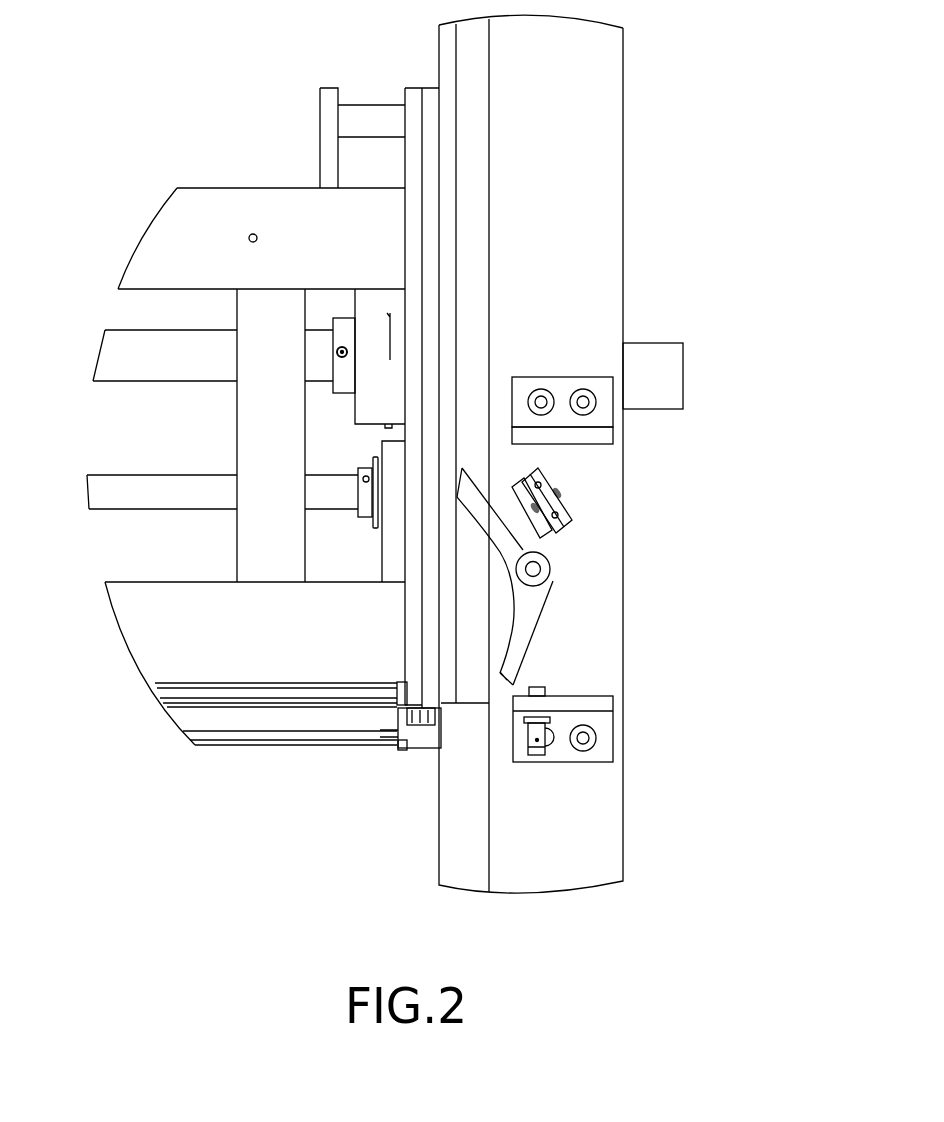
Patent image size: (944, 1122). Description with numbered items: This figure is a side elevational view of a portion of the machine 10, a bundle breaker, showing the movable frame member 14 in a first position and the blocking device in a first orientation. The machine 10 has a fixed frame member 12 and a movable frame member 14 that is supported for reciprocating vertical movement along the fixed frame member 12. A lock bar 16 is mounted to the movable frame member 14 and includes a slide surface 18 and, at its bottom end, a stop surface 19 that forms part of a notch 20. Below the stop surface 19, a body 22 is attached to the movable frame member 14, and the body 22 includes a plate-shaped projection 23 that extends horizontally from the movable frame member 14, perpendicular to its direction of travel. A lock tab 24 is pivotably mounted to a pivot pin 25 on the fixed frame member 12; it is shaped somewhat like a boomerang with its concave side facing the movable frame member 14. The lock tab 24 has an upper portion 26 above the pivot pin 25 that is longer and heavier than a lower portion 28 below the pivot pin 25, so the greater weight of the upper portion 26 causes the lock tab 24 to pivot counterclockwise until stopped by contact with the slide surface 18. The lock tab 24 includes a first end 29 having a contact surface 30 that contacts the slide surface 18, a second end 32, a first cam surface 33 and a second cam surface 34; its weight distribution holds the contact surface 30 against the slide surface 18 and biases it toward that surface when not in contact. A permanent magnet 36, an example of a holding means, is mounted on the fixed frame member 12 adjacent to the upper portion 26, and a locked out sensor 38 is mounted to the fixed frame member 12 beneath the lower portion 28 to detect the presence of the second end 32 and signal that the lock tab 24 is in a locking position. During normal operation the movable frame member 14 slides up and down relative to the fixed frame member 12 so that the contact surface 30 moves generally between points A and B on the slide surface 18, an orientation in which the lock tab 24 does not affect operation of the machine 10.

The machine 10 is at (203, 93).
The fixed frame member 12 is at (600, 58).
The movable frame member 14 is at (432, 107).
The lock bar 16 is at (448, 197).
The slide surface 18 is at (453, 293).
The stop surface 19 is at (445, 619).
The notch 20 is at (447, 630).
The body 22 is at (452, 754).
The plate-shaped projection 23 is at (480, 708).
The lock tab 24 is at (517, 538).
The pivot pin 25 is at (550, 573).
The upper portion 26 is at (490, 510).
The lower portion 28 is at (530, 613).
The first end 29 is at (468, 483).
The contact surface 30 is at (457, 498).
The second end 32 is at (505, 673).
The first cam surface 33 is at (458, 545).
The second cam surface 34 is at (512, 608).
The permanent magnet 36 is at (530, 480).
The locked out sensor 38 is at (543, 690).
The point A is at (458, 250).
The point B is at (457, 587).